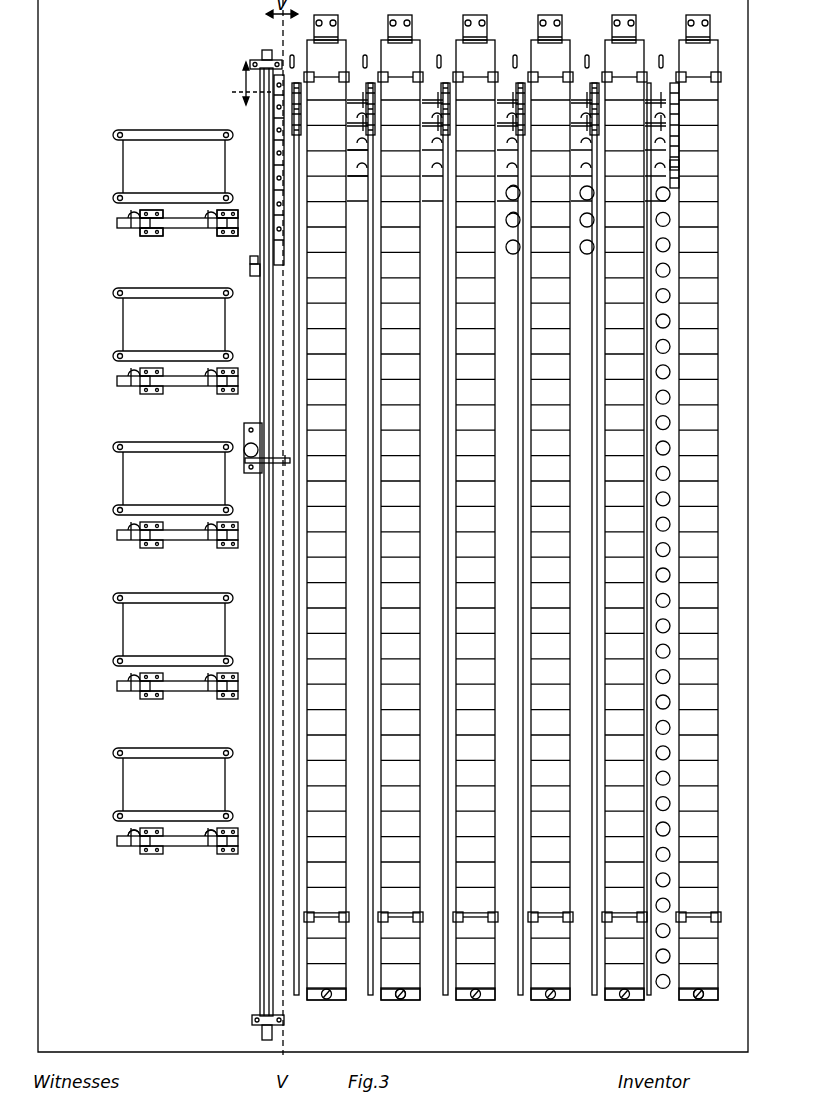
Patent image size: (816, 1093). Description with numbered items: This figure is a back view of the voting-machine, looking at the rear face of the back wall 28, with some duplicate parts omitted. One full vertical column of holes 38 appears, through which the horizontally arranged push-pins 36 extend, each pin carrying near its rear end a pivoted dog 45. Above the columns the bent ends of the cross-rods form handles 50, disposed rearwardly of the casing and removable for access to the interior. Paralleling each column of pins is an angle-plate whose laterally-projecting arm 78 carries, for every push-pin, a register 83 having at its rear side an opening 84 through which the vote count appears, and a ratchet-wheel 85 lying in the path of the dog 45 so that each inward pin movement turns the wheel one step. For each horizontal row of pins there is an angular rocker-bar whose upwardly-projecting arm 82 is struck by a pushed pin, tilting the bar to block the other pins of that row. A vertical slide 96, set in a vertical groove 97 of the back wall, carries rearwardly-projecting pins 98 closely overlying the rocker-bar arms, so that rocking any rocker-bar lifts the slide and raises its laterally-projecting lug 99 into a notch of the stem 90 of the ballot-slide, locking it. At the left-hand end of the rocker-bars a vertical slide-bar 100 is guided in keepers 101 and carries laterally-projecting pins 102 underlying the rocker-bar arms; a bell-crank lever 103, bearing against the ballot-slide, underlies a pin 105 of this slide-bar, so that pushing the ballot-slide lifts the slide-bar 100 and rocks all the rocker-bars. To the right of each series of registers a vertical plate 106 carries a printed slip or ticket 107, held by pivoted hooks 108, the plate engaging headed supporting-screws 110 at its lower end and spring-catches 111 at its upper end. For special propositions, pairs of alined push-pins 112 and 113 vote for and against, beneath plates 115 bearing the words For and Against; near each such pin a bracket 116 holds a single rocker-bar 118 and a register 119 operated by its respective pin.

The back wall 28 is at (40, 22).
The push-pins 36 is at (520, 205).
The holes 38 is at (658, 250).
The dog 45 is at (658, 198).
The handles 50 is at (482, 50).
The laterally-projecting arm 78 is at (452, 318).
The upwardly-projecting arm of rocker-bar 82 is at (350, 170).
The register 83 is at (300, 98).
The opening 84 is at (680, 170).
The ratchet-wheel 85 is at (446, 110).
The stem 90 is at (248, 445).
The vertical slide 96 is at (272, 313).
The vertical groove 97 is at (244, 83).
The rearwardly-projecting pins 98 is at (276, 230).
The laterally-projecting lug 99 is at (245, 463).
The slide-bar 100 is at (262, 576).
The keepers 101 is at (262, 58).
The laterally-projecting pins 102 is at (274, 132).
The bell-crank lever 103 is at (250, 270).
The pin 105 is at (252, 259).
The plate 106 is at (398, 1000).
The printed slip or ticket 107 is at (717, 428).
The pivoted hooks 108 is at (420, 78).
The supporting-screws 110 is at (408, 1003).
The spring-catches 111 is at (408, 14).
The push-pin 112 is at (210, 700).
The push-pin 113 is at (133, 700).
The plates 115 is at (156, 148).
The bracket 116 is at (157, 240).
The rocker-bar 118 is at (117, 228).
The register 119 is at (147, 240).